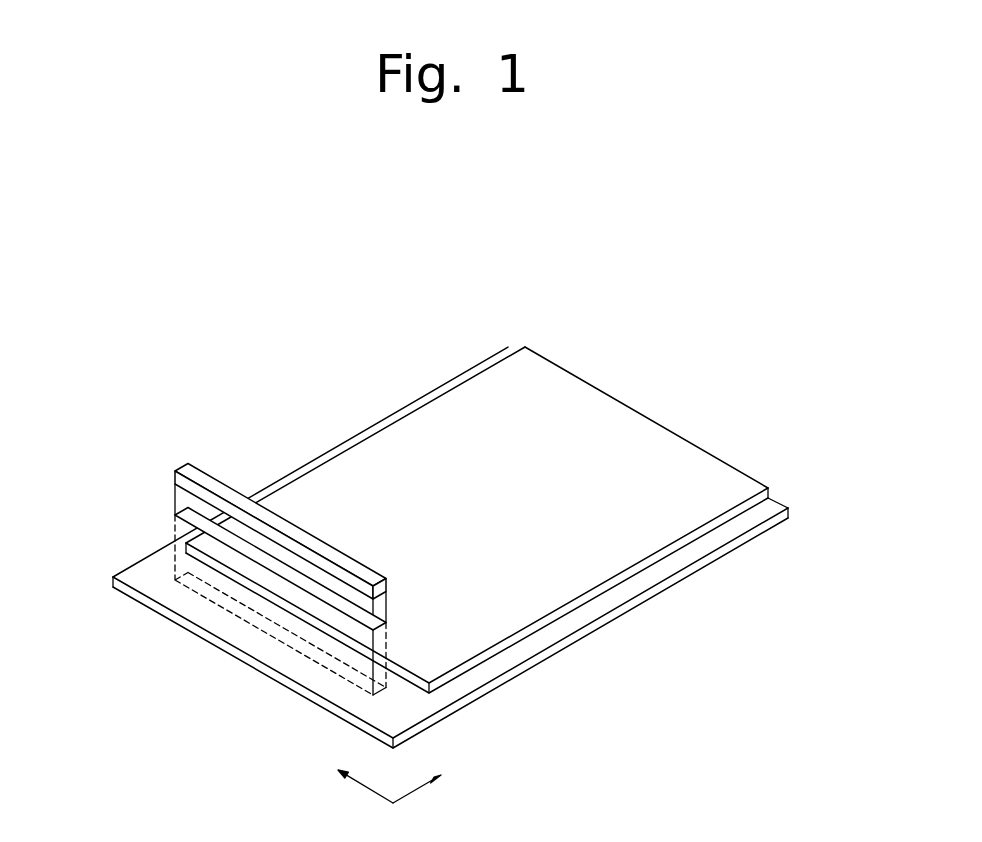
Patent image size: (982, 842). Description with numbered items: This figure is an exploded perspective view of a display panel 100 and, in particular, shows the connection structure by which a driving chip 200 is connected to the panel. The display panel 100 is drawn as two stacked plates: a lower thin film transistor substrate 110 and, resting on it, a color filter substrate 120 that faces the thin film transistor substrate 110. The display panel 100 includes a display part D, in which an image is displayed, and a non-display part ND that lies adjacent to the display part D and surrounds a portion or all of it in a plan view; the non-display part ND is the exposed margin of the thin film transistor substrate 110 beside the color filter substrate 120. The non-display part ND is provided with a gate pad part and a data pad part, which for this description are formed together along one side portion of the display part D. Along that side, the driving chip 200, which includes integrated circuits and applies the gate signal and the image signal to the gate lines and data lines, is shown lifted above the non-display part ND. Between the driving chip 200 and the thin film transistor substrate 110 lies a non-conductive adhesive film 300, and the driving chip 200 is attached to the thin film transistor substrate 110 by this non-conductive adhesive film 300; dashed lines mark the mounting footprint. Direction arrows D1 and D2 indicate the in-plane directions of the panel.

The display panel 100 is at (688, 439).
The thin film transistor substrate 110 is at (788, 510).
The color filter substrate 120 is at (770, 493).
The driving chip 200 is at (187, 464).
The non-conductive adhesive film 300 is at (187, 507).
The display part D is at (597, 405).
The non-display part ND is at (160, 580).
The first direction D1 is at (437, 779).
The second direction D2 is at (349, 779).